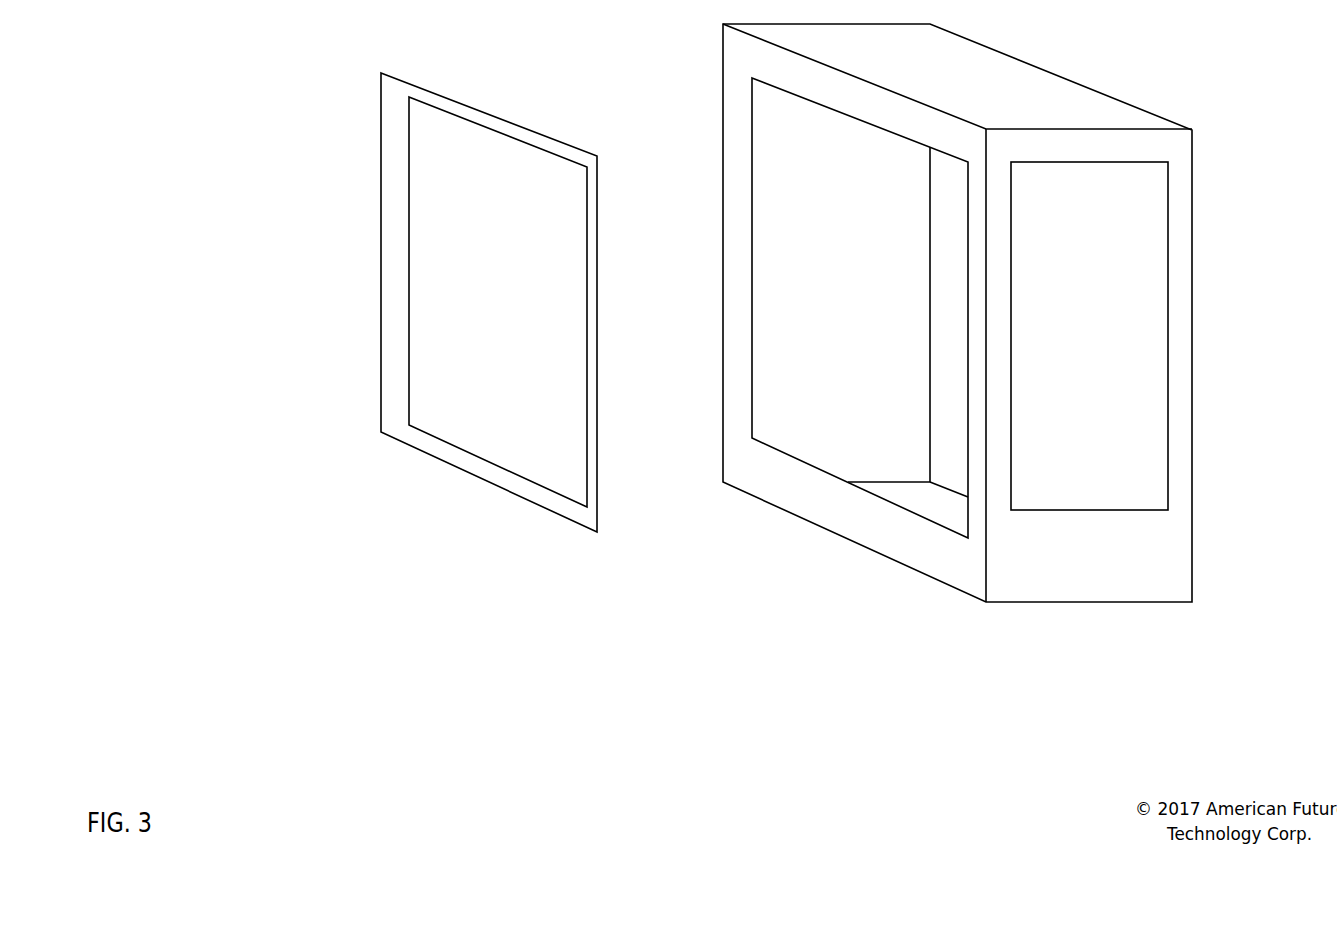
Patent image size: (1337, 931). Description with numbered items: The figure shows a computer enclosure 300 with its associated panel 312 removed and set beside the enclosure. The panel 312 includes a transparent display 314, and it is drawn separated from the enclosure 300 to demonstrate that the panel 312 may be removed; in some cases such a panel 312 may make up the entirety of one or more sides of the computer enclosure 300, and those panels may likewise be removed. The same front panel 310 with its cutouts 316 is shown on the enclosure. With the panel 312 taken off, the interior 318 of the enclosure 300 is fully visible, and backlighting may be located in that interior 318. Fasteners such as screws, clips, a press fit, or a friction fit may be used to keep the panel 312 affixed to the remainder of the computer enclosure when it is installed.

The computer enclosure 300 is at (779, 328).
The front panel 310 is at (970, 313).
The panel 312 is at (432, 302).
The transparent display 314 is at (409, 166).
The cutouts 316 is at (1154, 303).
The interior 318 is at (808, 177).